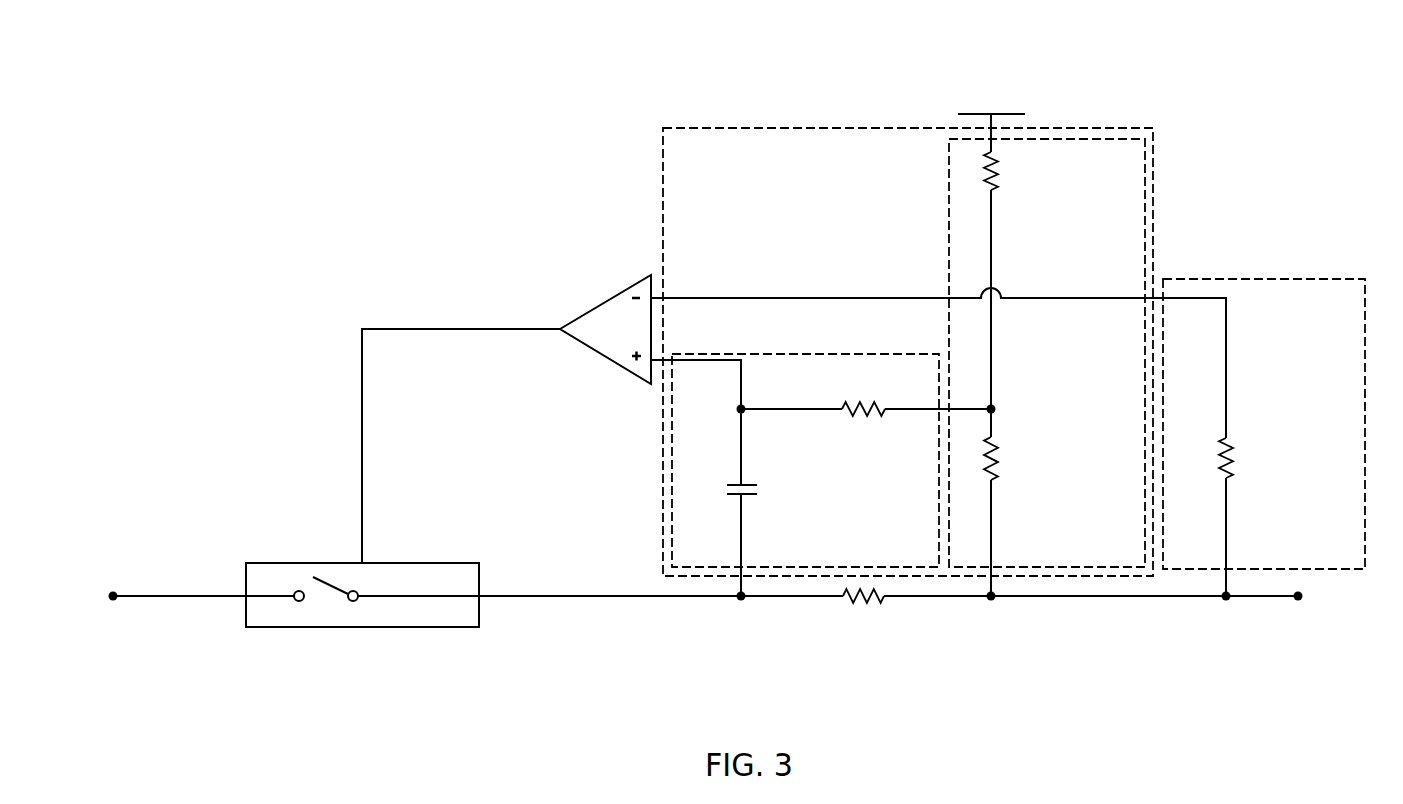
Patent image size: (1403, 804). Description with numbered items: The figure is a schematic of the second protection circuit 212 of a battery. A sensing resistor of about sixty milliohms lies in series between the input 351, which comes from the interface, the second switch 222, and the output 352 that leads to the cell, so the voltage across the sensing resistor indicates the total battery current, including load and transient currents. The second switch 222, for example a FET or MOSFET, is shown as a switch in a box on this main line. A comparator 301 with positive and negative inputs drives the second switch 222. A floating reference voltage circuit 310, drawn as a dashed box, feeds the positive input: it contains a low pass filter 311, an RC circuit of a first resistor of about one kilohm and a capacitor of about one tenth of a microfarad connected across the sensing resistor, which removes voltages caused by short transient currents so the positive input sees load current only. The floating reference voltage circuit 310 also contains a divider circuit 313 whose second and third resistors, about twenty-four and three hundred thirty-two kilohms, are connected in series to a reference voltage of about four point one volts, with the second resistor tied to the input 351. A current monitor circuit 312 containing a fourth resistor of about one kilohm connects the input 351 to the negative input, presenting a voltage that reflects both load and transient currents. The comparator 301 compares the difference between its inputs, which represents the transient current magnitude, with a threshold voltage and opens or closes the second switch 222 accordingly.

The second protection circuit 212 is at (258, 77).
The floating reference voltage circuit 310 is at (717, 127).
The divider circuit 313 is at (949, 205).
The low pass filter 311 is at (836, 353).
The current monitor circuit 312 is at (1292, 278).
The comparator 301 is at (605, 302).
The second switch 222 is at (312, 562).
The output 352 is at (113, 592).
The input 351 is at (1298, 600).